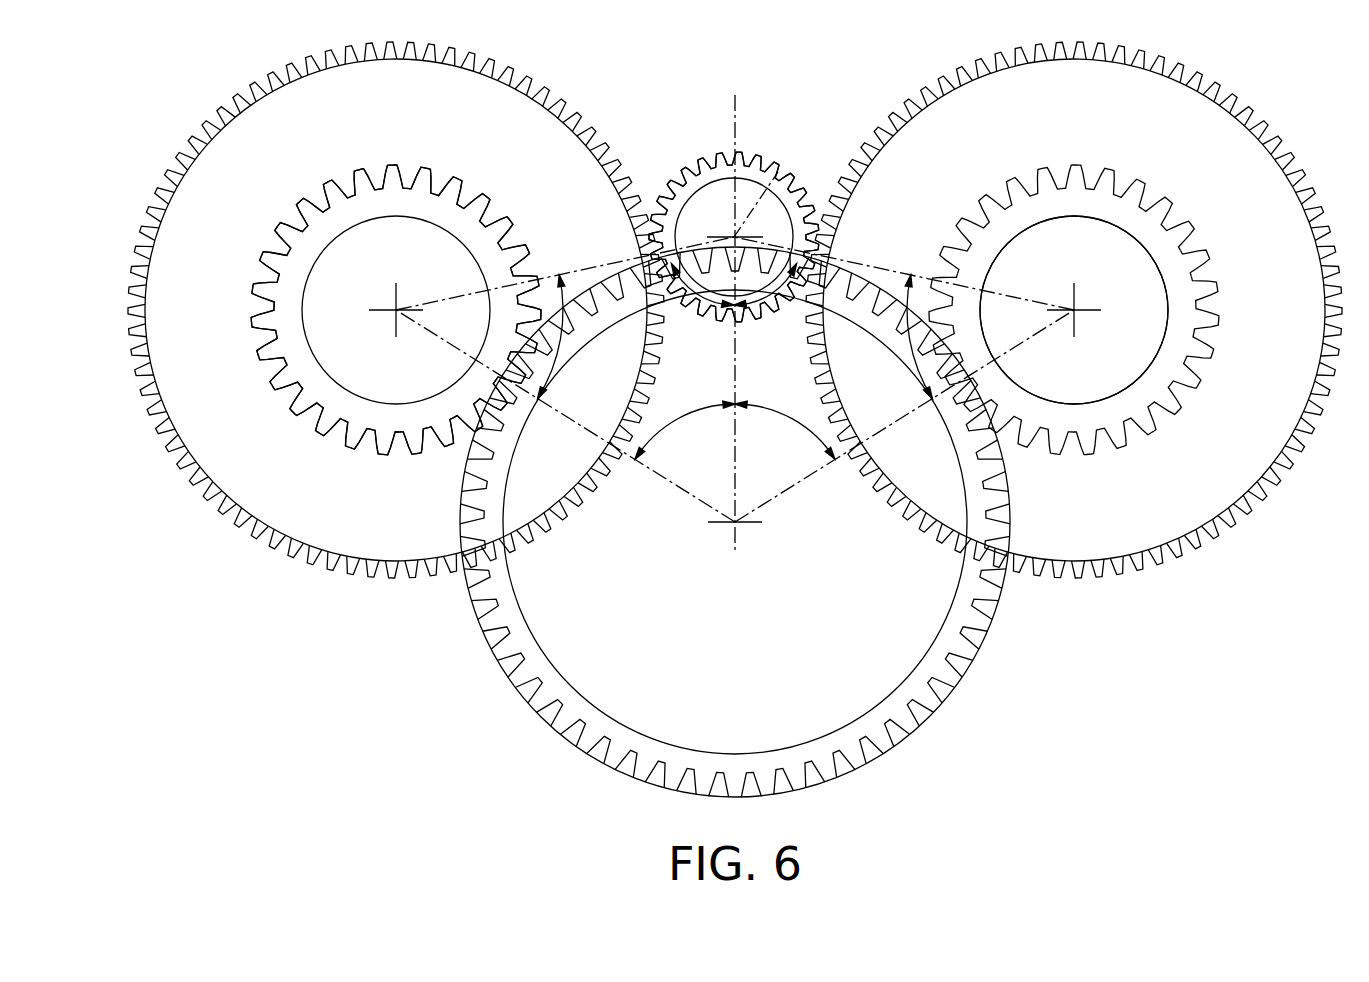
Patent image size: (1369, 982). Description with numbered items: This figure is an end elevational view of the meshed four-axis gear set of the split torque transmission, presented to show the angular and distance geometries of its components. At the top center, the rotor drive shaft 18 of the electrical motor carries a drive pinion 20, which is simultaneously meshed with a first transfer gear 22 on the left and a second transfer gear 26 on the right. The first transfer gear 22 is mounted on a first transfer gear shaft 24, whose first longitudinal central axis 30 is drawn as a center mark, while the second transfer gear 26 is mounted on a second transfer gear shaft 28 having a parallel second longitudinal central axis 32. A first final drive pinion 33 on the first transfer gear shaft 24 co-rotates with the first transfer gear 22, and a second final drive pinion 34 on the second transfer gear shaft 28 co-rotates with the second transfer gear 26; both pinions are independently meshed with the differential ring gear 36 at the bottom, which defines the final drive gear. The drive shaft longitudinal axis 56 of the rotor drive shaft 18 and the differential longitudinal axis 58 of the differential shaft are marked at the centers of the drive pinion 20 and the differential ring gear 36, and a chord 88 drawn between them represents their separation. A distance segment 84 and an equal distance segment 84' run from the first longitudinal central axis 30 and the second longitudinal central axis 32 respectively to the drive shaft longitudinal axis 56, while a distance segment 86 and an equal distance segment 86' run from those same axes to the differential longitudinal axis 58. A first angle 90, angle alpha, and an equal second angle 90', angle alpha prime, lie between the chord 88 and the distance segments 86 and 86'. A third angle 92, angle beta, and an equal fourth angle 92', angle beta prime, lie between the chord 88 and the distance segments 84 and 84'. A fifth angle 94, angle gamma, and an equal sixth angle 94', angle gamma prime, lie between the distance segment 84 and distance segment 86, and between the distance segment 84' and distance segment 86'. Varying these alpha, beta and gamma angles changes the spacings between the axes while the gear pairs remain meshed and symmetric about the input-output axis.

The rotor drive shaft 18 is at (725, 193).
The drive pinion 20 is at (663, 190).
The first transfer gear 22 is at (282, 103).
The first transfer gear shaft 24 is at (426, 255).
The second transfer gear 26 is at (1206, 109).
The second transfer gear shaft 28 is at (1133, 348).
The first longitudinal central axis 30 is at (394, 312).
The second longitudinal central axis 32 is at (1068, 306).
The first final drive pinion 33 is at (262, 300).
The second final drive pinion 34 is at (1100, 203).
The differential ring gear 36 is at (908, 690).
The drive shaft longitudinal axis 56 is at (778, 172).
The differential longitudinal axis 58 is at (737, 525).
The distance segment 84 is at (565, 260).
The distance segment 84' is at (904, 262).
The distance segment 86 is at (565, 420).
The distance segment 86' is at (904, 416).
The chord 88 is at (733, 480).
The first angle 90 is at (685, 430).
The second angle 90' is at (785, 430).
The third angle 92 is at (702, 311).
The fourth angle 92' is at (765, 314).
The fifth angle 94 is at (577, 337).
The sixth angle 94' is at (893, 337).